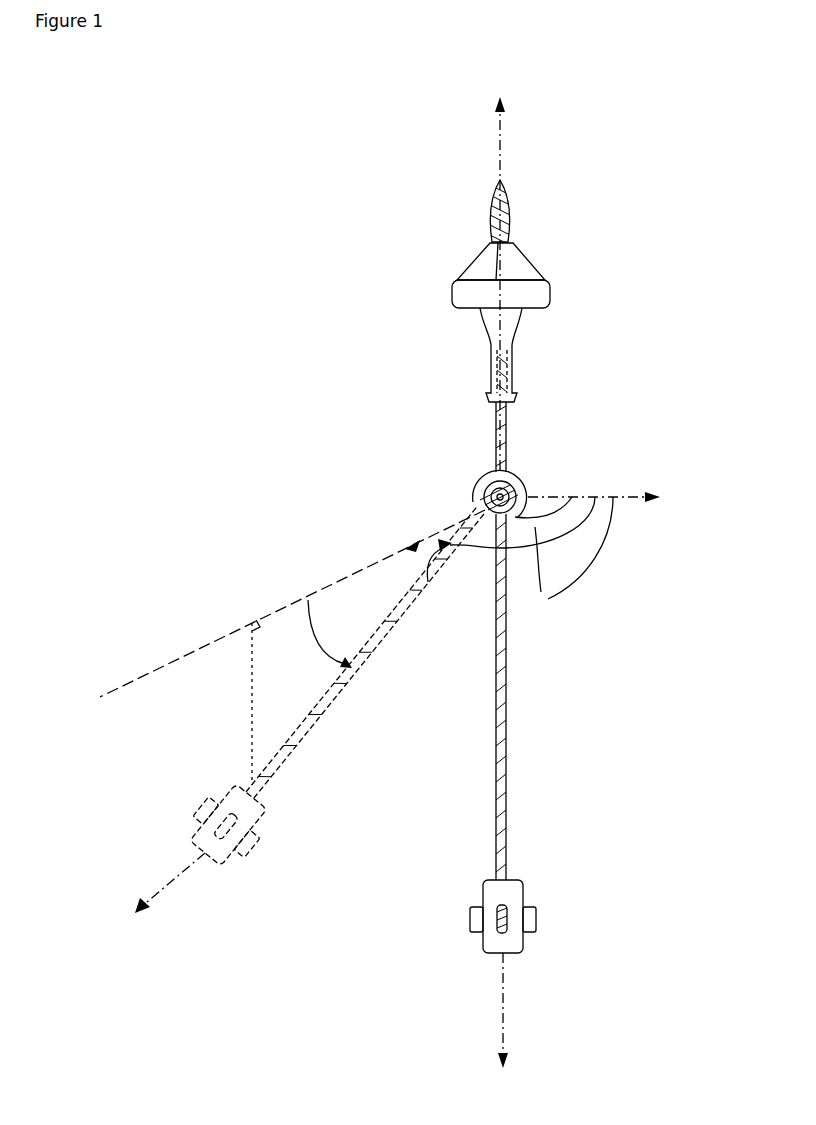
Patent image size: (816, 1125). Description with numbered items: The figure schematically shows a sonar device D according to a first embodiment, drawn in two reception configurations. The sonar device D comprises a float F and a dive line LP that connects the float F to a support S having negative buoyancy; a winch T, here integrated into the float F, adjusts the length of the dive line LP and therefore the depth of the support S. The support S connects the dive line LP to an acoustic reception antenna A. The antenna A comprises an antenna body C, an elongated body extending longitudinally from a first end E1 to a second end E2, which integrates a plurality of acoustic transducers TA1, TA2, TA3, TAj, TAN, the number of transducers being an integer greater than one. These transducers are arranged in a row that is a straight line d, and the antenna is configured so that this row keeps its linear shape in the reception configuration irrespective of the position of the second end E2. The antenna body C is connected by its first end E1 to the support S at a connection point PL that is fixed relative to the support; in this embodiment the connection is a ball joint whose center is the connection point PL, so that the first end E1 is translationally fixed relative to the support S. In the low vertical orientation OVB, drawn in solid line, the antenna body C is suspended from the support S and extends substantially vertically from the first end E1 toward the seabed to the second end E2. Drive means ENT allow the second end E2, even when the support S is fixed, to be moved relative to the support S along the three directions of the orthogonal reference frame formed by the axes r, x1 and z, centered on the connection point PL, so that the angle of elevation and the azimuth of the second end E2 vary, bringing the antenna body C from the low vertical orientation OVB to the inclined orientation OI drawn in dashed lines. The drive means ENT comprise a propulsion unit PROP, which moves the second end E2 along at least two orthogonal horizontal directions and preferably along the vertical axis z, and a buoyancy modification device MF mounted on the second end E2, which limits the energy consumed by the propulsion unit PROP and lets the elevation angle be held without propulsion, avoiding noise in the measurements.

The sonar device D is at (296, 243).
The float F is at (483, 260).
The winch T is at (496, 360).
The dive line LP is at (496, 436).
The support S is at (524, 486).
The connection point PL is at (473, 497).
The first end E1 is at (518, 517).
The second end E2 is at (495, 879).
The antenna body C is at (496, 708).
The acoustic reception antenna A is at (547, 722).
The acoustic transducer TA1 is at (514, 596).
The acoustic transducer TA2 is at (506, 570).
The acoustic transducer TA3 is at (496, 616).
The acoustic transducer TAj is at (506, 776).
The acoustic transducer TAN is at (506, 862).
The low vertical orientation OVB is at (537, 825).
The propulsion unit PROP is at (470, 908).
The buoyancy modification device MF is at (486, 953).
The drive means ENT is at (535, 972).
The inclined orientation OI is at (224, 753).
The z-axis z is at (512, 273).
The r-axis r is at (605, 495).
The row of transducers d is at (321, 970).
The x1-axis x1 is at (292, 603).